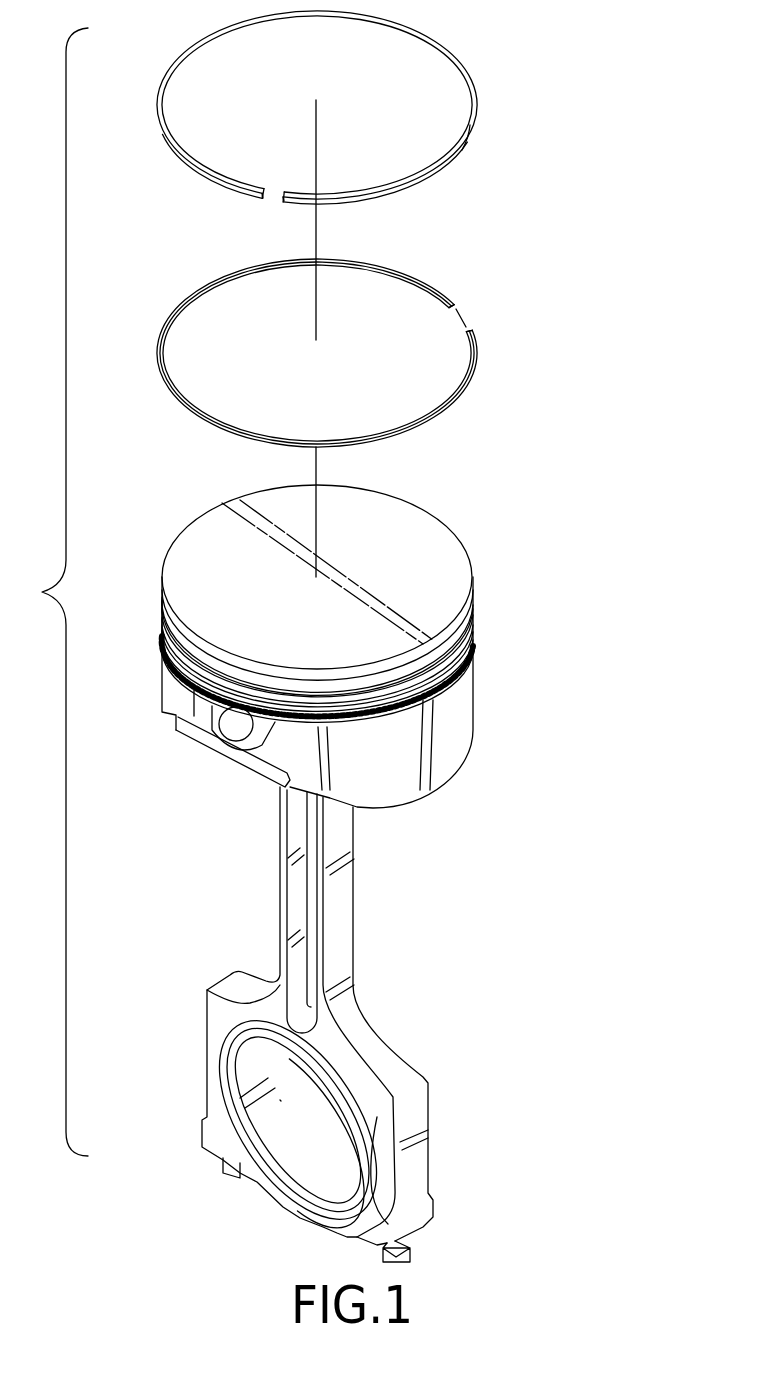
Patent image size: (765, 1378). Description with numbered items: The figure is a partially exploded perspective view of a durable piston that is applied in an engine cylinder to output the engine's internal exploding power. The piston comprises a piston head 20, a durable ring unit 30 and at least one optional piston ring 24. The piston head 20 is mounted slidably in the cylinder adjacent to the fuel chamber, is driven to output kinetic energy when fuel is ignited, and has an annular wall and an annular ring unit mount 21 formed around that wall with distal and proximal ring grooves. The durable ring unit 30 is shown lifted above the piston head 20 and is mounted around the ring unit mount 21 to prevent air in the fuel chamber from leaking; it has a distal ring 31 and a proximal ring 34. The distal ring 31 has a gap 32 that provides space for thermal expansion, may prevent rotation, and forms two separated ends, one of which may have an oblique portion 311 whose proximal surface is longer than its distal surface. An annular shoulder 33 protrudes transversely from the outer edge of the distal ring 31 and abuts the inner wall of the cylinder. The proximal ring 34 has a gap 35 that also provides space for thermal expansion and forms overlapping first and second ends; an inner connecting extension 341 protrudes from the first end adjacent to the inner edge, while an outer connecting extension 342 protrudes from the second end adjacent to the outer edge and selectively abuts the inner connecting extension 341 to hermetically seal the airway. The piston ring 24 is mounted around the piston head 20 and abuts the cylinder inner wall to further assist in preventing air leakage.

The piston head 20 is at (440, 540).
The ring unit mount 21 is at (473, 622).
The piston ring 24 is at (456, 654).
The durable ring unit 30 is at (518, 63).
The distal ring 31 is at (446, 57).
The oblique portion 311 is at (290, 194).
The gap 32 is at (272, 195).
The shoulder 33 is at (479, 120).
The proximal ring 34 is at (479, 368).
The inner connecting extension 341 is at (466, 334).
The outer connecting extension 342 is at (454, 304).
The gap 35 is at (462, 320).